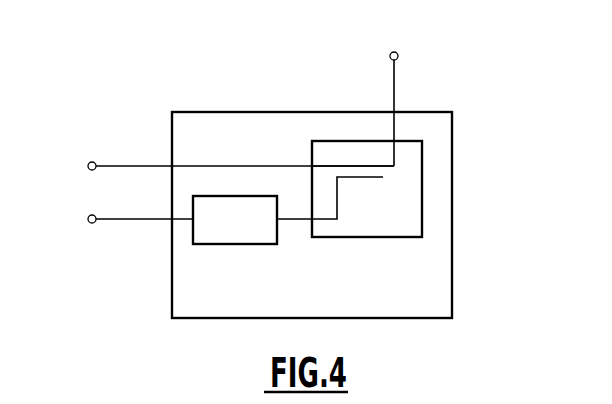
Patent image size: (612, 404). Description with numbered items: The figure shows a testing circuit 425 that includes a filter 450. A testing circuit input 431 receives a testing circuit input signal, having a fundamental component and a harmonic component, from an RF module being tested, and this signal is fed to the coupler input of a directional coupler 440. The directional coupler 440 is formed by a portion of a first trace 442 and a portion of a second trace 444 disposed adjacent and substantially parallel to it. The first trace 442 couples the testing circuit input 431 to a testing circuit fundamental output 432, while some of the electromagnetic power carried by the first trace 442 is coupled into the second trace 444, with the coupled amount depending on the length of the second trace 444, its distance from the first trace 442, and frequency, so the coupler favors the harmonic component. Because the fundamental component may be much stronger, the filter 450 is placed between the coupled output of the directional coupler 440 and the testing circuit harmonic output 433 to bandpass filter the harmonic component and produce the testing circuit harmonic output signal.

The testing circuit 425 is at (453, 172).
The testing circuit input 431 is at (398, 54).
The testing circuit fundamental output 432 is at (92, 162).
The testing circuit harmonic output 433 is at (92, 223).
The directional coupler 440 is at (366, 238).
The first trace 442 is at (351, 146).
The second trace 444 is at (360, 196).
The filter 450 is at (237, 245).